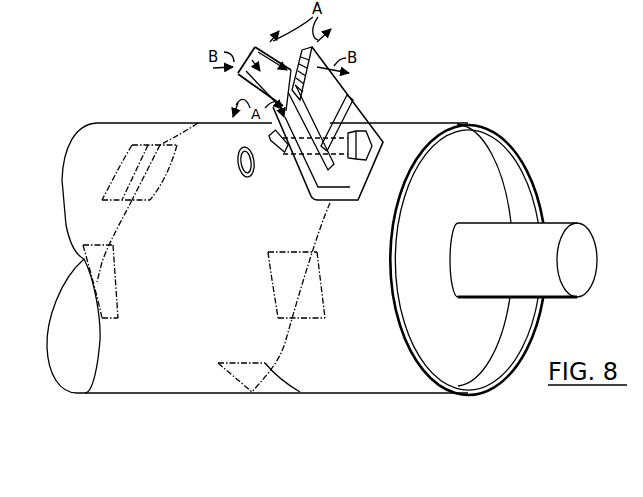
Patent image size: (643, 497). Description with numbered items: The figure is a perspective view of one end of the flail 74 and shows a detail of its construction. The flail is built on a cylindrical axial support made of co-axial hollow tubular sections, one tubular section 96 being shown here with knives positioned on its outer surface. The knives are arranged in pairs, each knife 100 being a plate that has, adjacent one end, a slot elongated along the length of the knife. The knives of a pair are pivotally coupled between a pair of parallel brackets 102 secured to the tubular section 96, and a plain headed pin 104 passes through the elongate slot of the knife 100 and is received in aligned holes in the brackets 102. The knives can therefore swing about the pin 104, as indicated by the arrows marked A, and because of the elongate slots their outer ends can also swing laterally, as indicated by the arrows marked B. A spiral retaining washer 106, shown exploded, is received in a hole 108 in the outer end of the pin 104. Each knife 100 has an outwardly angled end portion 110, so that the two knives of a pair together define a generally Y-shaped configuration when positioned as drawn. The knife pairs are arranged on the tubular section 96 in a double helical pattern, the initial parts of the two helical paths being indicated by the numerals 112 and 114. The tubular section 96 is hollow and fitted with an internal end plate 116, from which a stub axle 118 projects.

The flail 74 is at (501, 70).
The tubular section 96 is at (489, 125).
The knife 100 is at (255, 52).
The bracket 102 is at (353, 117).
The plain headed pin 104 is at (374, 148).
The spiral retaining washer 106 is at (254, 176).
The hole 108 is at (271, 137).
The outwardly angled end portion 110 is at (236, 76).
The helical path 112 is at (114, 222).
The helical path 114 is at (313, 241).
The internal end plate 116 is at (491, 331).
The stub axle 118 is at (550, 278).